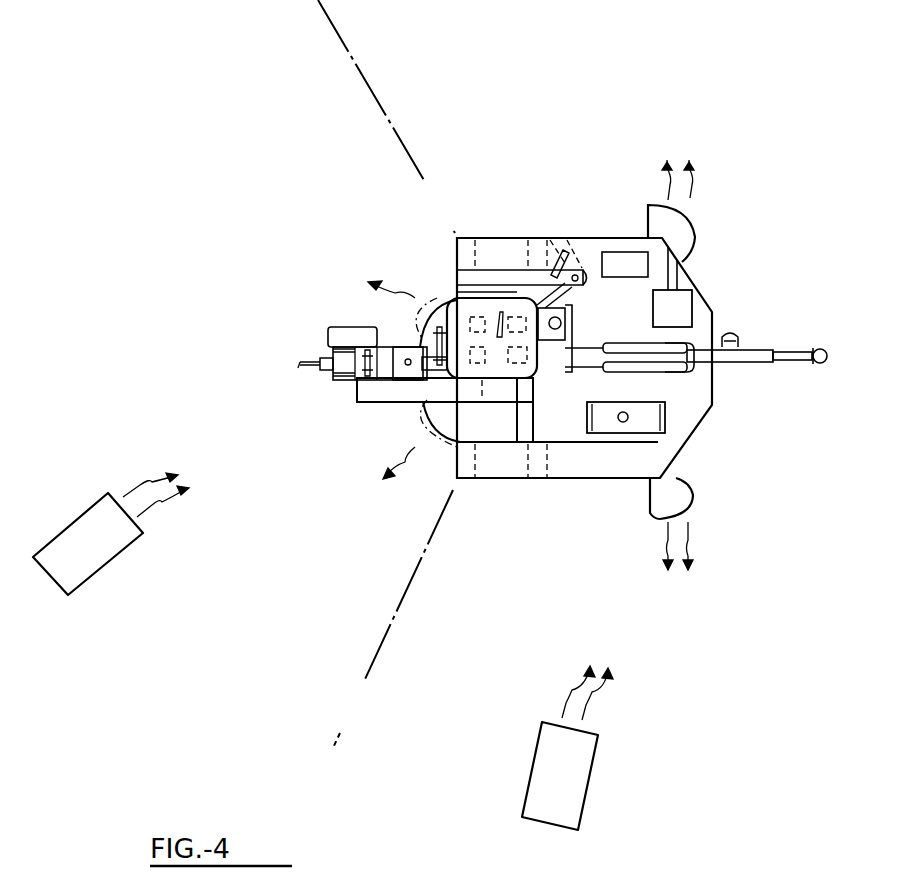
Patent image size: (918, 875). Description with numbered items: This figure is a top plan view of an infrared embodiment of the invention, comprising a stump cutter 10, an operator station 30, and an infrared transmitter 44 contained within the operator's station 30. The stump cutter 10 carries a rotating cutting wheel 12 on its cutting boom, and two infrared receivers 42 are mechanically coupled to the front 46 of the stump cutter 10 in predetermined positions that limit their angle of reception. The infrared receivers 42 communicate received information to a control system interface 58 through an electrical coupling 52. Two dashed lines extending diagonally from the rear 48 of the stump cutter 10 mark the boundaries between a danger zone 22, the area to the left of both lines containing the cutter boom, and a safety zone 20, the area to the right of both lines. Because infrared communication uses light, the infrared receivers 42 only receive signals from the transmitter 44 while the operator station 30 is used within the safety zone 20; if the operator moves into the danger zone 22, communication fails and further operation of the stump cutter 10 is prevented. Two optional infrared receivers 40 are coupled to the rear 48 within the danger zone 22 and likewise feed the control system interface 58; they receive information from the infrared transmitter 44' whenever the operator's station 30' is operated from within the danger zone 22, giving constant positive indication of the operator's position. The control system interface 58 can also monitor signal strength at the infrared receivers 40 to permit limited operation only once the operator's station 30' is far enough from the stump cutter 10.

The stump cutter 10 is at (278, 278).
The cutting wheel 12 is at (305, 366).
The safety zone 20 is at (376, 100).
The danger zone 22 is at (388, 126).
The operator station 30 is at (601, 776).
The operator's station 30' is at (111, 548).
The infrared receivers 40 is at (413, 310).
The infrared receivers 42 is at (688, 228).
The infrared transmitter 44 is at (622, 698).
The infrared transmitter 44' is at (126, 472).
The front 46 is at (715, 388).
The rear 48 is at (457, 258).
The electrical coupling 52 is at (677, 277).
The control system interface 58 is at (690, 315).